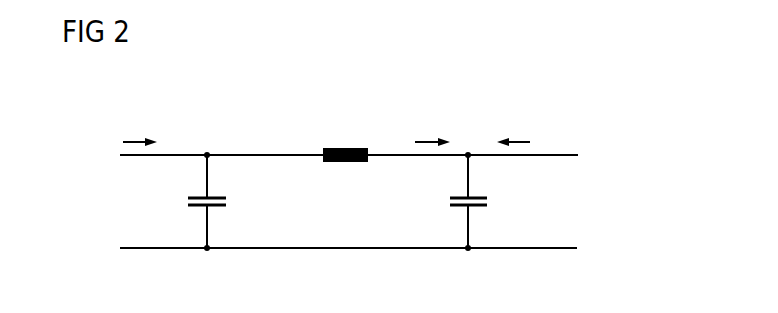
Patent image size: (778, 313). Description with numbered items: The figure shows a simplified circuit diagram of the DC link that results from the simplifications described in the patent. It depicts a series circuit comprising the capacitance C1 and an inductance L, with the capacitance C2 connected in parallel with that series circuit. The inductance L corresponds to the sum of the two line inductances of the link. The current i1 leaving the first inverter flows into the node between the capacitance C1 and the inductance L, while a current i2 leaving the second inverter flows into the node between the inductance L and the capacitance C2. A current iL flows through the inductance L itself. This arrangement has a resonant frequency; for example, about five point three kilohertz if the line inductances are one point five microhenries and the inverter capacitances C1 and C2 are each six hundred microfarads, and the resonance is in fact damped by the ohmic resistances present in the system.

The current i1 is at (137, 140).
The inductance L is at (348, 148).
The current iL is at (431, 140).
The current i2 is at (500, 140).
The capacitance C1 is at (193, 206).
The capacitance C2 is at (455, 206).